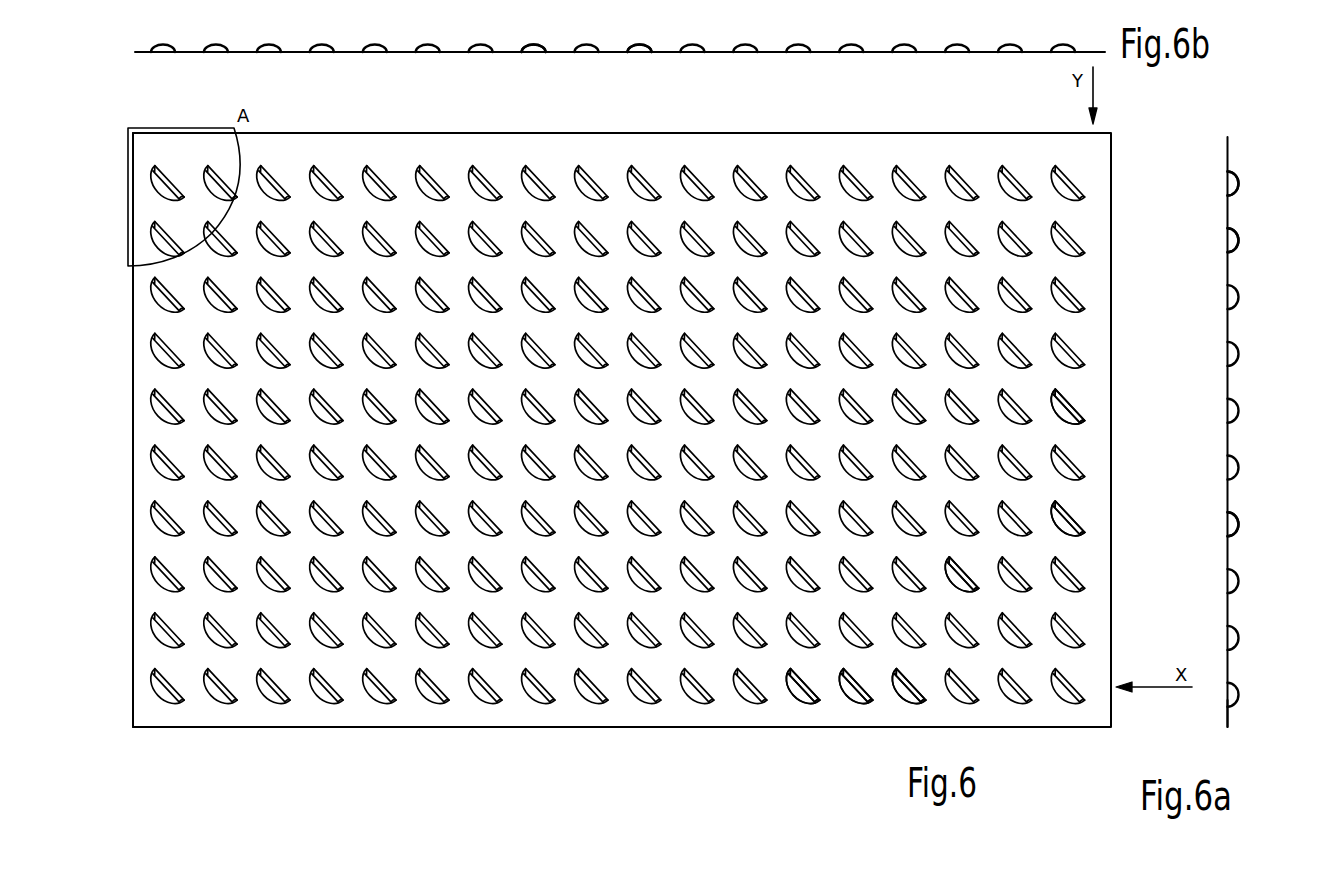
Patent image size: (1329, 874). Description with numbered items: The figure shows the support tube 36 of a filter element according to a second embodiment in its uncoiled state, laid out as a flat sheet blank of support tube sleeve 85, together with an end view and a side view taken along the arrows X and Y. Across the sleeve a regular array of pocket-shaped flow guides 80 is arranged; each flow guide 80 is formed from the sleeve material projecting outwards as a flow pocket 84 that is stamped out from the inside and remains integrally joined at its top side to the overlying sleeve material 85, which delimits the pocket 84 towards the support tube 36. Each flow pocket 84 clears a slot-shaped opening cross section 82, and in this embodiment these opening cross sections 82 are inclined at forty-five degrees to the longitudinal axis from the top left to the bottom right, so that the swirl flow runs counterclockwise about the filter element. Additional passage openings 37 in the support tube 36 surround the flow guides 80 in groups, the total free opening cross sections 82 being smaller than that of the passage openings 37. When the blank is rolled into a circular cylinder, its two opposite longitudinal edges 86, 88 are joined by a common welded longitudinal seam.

In FIG. 6, the support tube 36 is at (1077, 440).
In FIG. 6A, the support tube 36 is at (1228, 155).
In FIG. 6, the passage openings 37 is at (553, 665).
In FIG. 6A, the flow guide 80 is at (1233, 407).
In FIG. 6B, the flow guide 80 is at (422, 53).
In FIG. 6A, the opening cross section 82 is at (1238, 527).
In FIG. 6B, the opening cross section 82 is at (530, 53).
In FIG. 6, the flow pocket 84 is at (903, 690).
In FIG. 6A, the flow pocket 84 is at (1237, 243).
In FIG. 6, the support tube sleeve 85 is at (1062, 503).
In FIG. 6A, the support tube sleeve 85 is at (1230, 717).
In FIG. 6B, the support tube sleeve 85 is at (927, 55).
In FIG. 6, the longitudinal edge 86 is at (1082, 397).
In FIG. 6, the longitudinal edge 88 is at (132, 352).